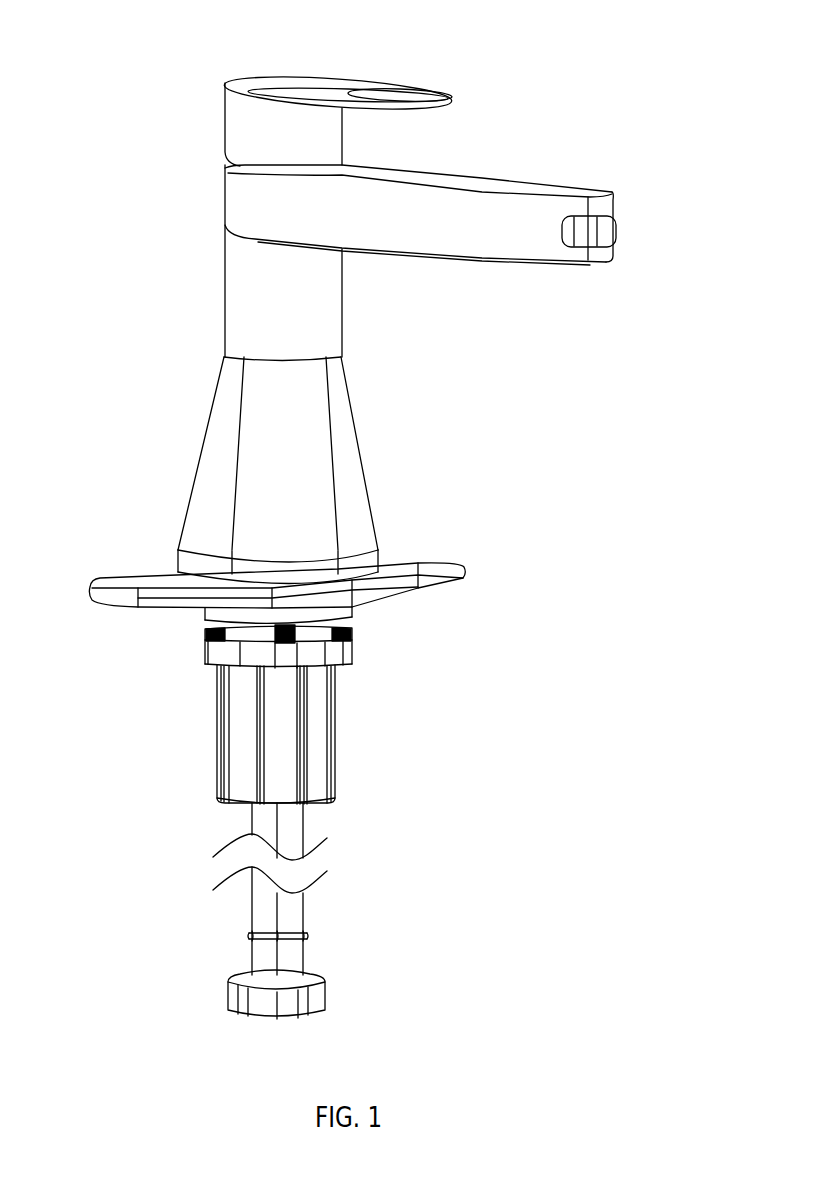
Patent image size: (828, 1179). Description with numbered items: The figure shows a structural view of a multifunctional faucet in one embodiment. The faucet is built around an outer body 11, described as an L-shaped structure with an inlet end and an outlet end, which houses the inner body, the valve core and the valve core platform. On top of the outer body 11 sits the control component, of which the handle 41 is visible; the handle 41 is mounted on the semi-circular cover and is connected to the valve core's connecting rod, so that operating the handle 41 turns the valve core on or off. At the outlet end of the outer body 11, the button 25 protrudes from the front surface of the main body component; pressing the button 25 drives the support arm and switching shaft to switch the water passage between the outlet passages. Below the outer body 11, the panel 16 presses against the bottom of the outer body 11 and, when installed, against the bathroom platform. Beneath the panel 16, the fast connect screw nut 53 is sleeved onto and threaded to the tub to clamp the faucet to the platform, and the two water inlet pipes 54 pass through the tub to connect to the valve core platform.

The handle 41 is at (238, 128).
The outer body 11 is at (237, 218).
The button 25 is at (607, 232).
The panel 16 is at (164, 588).
The fast connect screw nut 53 is at (225, 722).
The water inlet pipes 54 is at (255, 958).